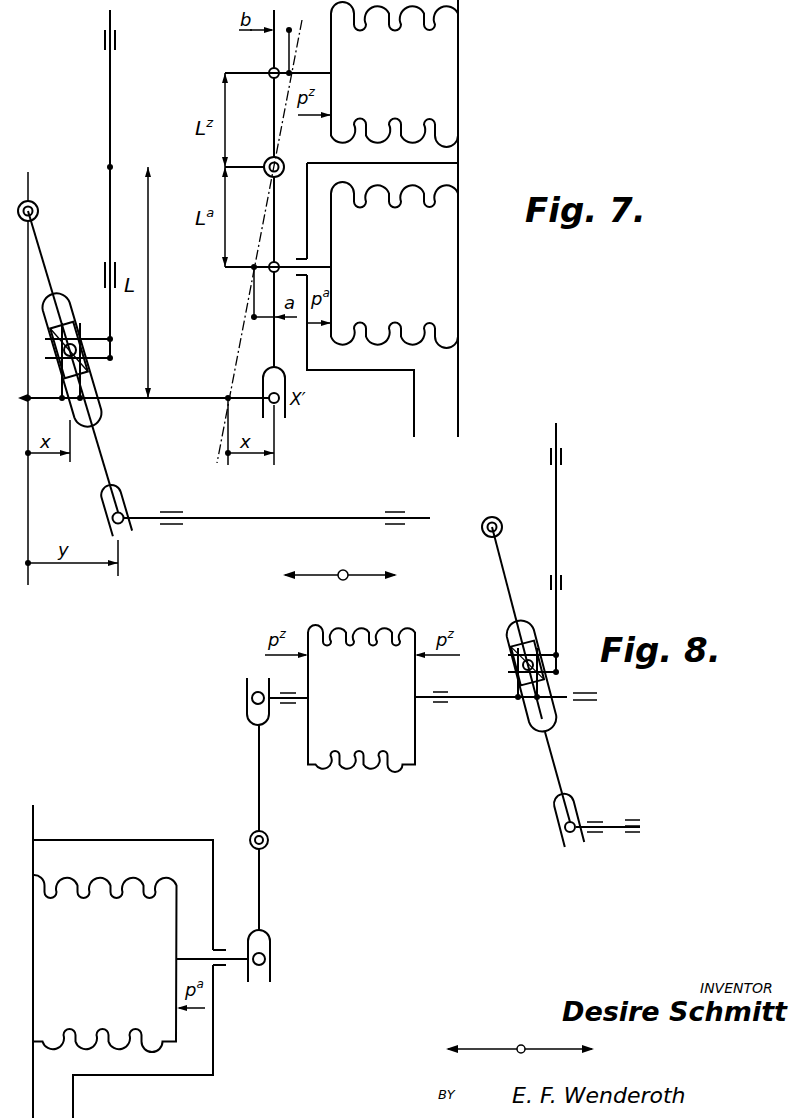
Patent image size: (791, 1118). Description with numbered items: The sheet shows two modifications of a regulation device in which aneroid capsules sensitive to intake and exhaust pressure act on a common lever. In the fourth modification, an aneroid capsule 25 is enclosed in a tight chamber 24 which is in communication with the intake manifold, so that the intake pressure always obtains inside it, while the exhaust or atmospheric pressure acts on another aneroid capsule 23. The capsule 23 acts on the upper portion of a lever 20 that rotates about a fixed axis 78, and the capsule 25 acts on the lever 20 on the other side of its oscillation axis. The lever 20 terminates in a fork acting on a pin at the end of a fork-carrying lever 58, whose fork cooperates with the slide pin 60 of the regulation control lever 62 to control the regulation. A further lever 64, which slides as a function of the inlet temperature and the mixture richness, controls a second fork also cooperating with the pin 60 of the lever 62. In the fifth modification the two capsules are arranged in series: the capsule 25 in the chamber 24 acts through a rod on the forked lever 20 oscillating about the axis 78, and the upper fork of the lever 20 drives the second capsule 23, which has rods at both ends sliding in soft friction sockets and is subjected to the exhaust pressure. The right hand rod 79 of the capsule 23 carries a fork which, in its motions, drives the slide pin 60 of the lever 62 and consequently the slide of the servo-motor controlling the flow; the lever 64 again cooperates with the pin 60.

In FIG. 7, the lever 20 is at (274, 226).
In FIG. 8, the lever 20 is at (258, 762).
In FIG. 7, the aneroid capsule 23 is at (394, 74).
In FIG. 8, the aneroid capsule 23 is at (361, 698).
In FIG. 7, the chamber 24 is at (432, 172).
In FIG. 7, the aneroid capsule 25 is at (394, 265).
In FIG. 8, the aneroid capsule 25 is at (105, 963).
In FIG. 7, the lever 58 is at (192, 397).
In FIG. 7, the pin 60 is at (86, 365).
In FIG. 7, the regulation control lever 62 is at (75, 378).
In FIG. 7, the lever 64 is at (110, 167).
In FIG. 8, the lever 64 is at (558, 540).
In FIG. 8, the axis 78 is at (270, 840).
In FIG. 8, the rod 79 is at (471, 700).